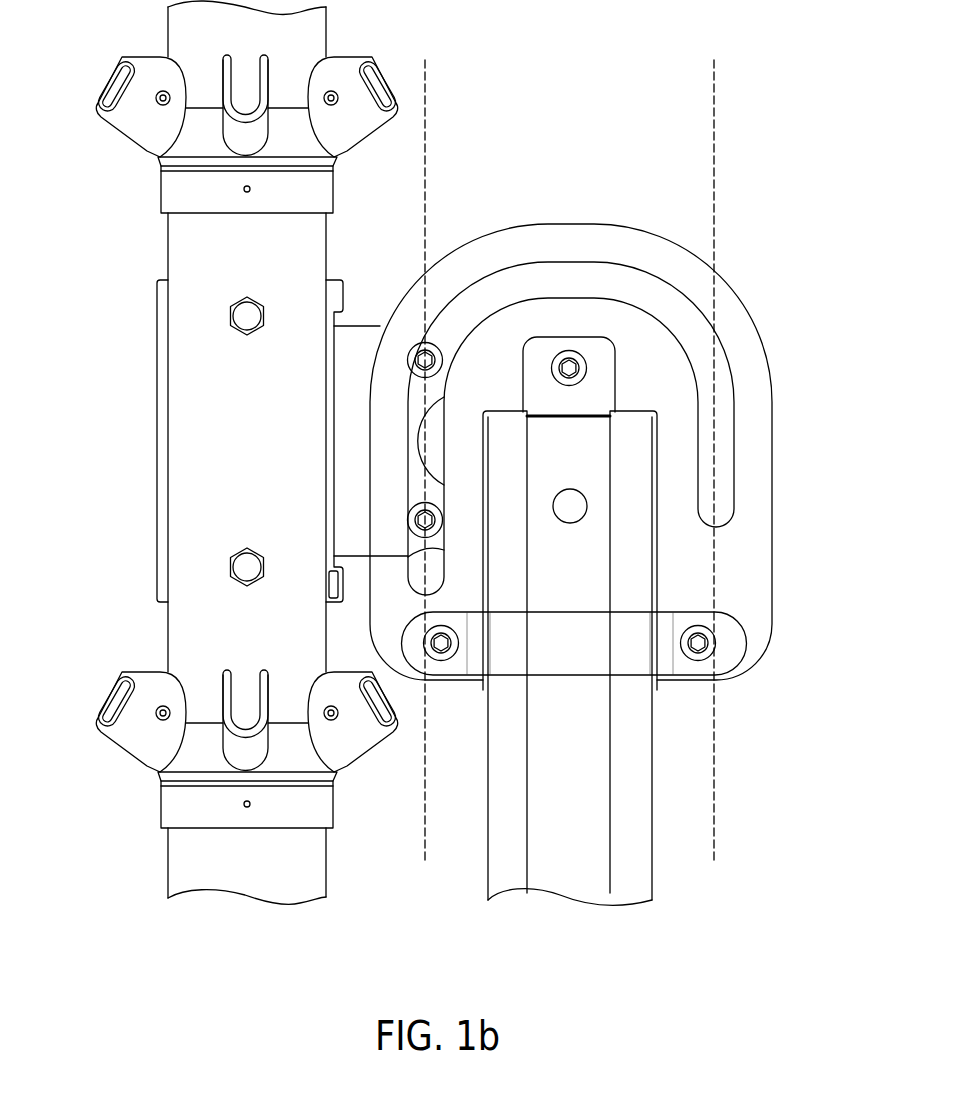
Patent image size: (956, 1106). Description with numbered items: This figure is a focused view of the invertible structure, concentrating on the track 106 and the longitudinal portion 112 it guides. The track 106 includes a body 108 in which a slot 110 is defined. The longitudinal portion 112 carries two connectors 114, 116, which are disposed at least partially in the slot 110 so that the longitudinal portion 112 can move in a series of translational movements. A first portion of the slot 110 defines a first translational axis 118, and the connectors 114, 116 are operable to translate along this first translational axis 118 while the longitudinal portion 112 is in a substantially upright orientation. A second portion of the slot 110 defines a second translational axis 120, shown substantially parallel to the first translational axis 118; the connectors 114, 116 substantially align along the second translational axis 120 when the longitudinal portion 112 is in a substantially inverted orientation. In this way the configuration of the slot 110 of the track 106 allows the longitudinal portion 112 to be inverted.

The track 106 is at (749, 267).
The body 108 is at (750, 545).
The slot 110 is at (722, 472).
The longitudinal portion 112 is at (168, 250).
The connector 114 is at (413, 348).
The connector 116 is at (413, 510).
The first translational axis 118 is at (431, 149).
The second translational axis 120 is at (720, 148).